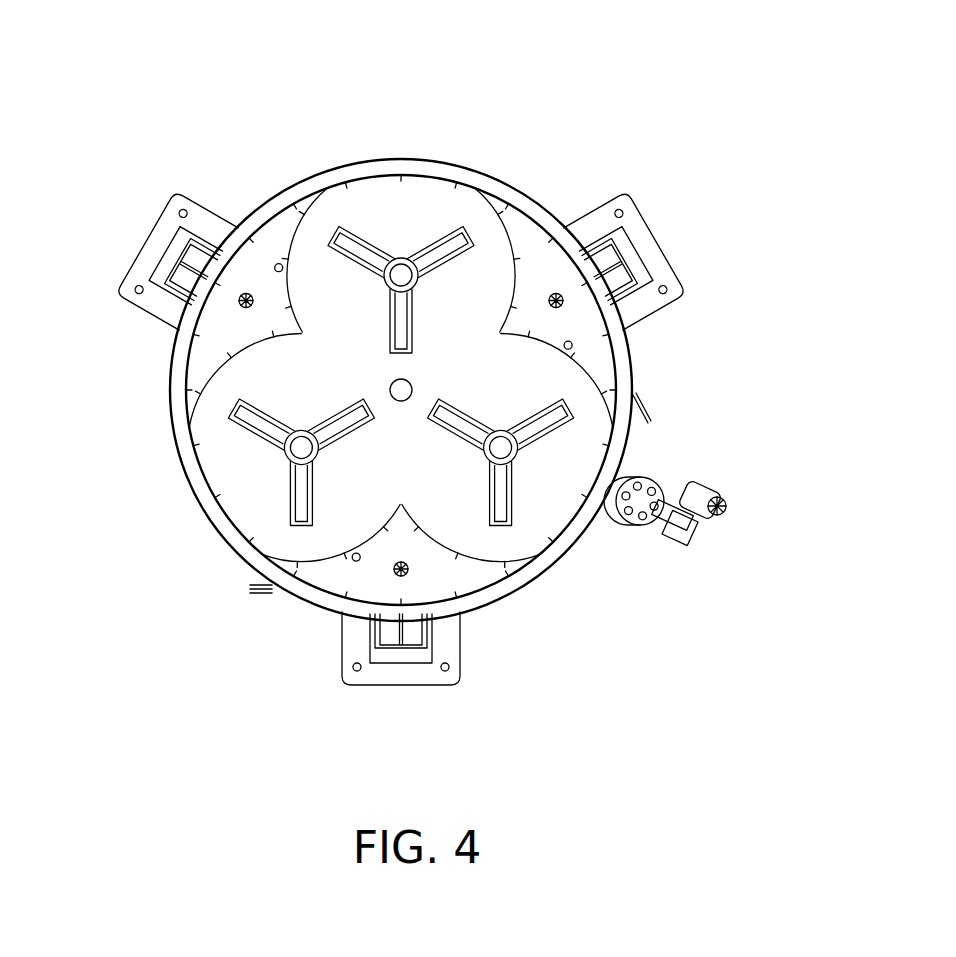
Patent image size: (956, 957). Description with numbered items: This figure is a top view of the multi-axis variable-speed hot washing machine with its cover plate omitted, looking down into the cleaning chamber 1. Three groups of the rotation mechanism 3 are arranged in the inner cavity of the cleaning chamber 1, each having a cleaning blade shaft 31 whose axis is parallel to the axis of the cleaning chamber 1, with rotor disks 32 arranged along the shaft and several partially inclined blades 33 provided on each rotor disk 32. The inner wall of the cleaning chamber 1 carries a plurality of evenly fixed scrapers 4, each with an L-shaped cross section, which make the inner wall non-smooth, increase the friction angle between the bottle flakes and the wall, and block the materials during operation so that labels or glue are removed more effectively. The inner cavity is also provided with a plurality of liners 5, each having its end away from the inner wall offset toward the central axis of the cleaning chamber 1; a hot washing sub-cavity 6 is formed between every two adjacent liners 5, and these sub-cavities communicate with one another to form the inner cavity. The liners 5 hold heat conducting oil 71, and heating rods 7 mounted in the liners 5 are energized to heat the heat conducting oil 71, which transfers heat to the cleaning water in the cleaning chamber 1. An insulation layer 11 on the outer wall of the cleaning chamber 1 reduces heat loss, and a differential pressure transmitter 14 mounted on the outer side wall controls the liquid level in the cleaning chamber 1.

The cleaning chamber 1 is at (228, 476).
The insulation layer 11 is at (243, 543).
The rotation mechanism 3 is at (401, 272).
The cleaning blade shaft 31 is at (405, 262).
The rotor disk 32 is at (396, 265).
The partially inclined blade 33 is at (368, 221).
The scraper 4 is at (593, 393).
The liner 5 is at (249, 222).
The hot washing sub-cavity 6 is at (228, 381).
The heating rod 7 is at (410, 572).
The heat conducting oil 71 is at (470, 577).
The differential pressure transmitter 14 is at (711, 531).